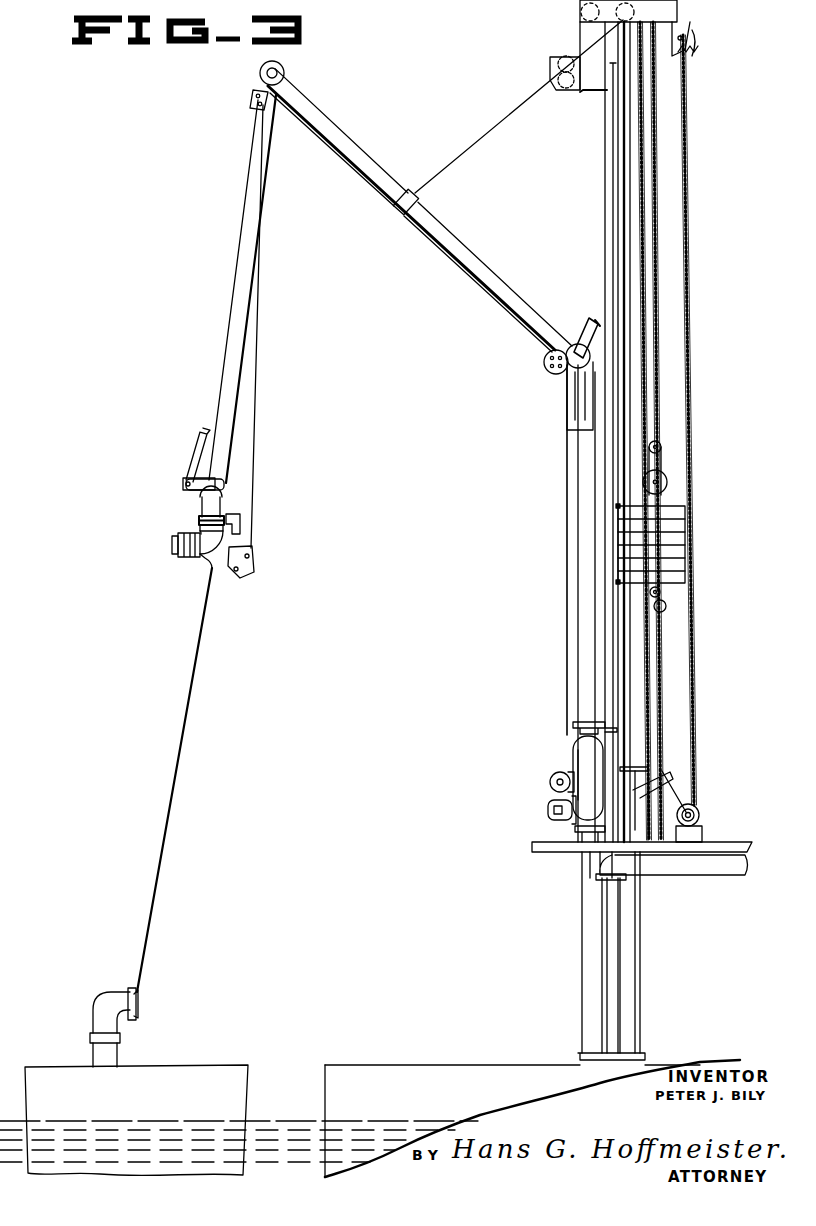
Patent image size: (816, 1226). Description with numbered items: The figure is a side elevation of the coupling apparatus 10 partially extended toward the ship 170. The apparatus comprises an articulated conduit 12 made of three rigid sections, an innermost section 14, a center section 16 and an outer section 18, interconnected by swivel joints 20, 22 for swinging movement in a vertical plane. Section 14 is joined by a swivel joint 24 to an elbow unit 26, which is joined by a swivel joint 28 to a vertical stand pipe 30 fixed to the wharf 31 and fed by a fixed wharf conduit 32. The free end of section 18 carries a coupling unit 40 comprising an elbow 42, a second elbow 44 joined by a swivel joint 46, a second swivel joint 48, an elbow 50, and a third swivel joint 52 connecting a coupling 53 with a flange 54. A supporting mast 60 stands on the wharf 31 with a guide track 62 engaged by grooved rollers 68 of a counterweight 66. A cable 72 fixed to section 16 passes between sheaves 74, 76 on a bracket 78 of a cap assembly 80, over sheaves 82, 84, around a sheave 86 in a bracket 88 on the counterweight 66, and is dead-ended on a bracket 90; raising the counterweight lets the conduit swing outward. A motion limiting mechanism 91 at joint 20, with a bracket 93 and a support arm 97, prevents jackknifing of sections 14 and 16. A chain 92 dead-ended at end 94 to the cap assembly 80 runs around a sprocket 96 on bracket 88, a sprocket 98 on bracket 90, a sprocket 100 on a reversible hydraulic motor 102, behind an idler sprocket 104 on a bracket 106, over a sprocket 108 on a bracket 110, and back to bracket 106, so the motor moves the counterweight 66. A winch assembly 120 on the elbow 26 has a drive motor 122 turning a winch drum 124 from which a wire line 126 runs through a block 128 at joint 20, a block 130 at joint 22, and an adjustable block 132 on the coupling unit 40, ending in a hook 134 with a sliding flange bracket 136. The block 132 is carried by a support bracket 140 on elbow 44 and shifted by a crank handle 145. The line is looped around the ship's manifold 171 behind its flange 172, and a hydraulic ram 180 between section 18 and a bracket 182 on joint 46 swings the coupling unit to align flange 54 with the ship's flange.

The coupling apparatus 10 is at (208, 220).
The articulated conduit 12 is at (458, 266).
The innermost conduit section 14 is at (586, 634).
The center conduit section 16 is at (340, 134).
The outer conduit section 18 is at (222, 363).
The swivel joint 20 is at (560, 352).
The swivel joint 22 is at (283, 68).
The swivel joint 24 is at (574, 736).
The elbow unit 26 is at (586, 750).
The swivel joint 28 is at (580, 832).
The vertical stand pipe 30 is at (592, 942).
The wharf 31 is at (440, 1080).
The fixed wharf conduit 32 is at (708, 870).
The coupling unit 40 is at (170, 529).
The elbow 42 is at (230, 480).
The second elbow 44 is at (216, 504).
The swivel joint 46 is at (226, 492).
The second swivel joint 48 is at (204, 528).
The elbow 50 is at (212, 568).
The third swivel joint 52 is at (204, 562).
The coupling 53 is at (170, 545).
The flange 54 is at (180, 552).
The supporting mast 60 is at (606, 160).
The guide track 62 is at (614, 180).
The counterweight 66 is at (670, 506).
The grooved rollers 68 is at (616, 582).
The cable 72 is at (490, 150).
The sheave 74 is at (560, 56).
The sheave 76 is at (560, 74).
The bracket 78 is at (550, 62).
The cap assembly 80 is at (680, 16).
The sheave 82 is at (584, 5).
The sheave 84 is at (670, 4).
The sheave 86 is at (668, 484).
The bracket 88 is at (662, 470).
The bracket 90 is at (688, 40).
The motion limiting mechanism 91 is at (596, 318).
The chain 92 is at (688, 302).
The bracket 93 is at (576, 344).
The chain end 94 is at (594, 86).
The sprocket 96 is at (672, 442).
The support arm 97 is at (586, 344).
The sprocket 98 is at (686, 42).
The sprocket 100 is at (700, 812).
The reversible hydraulic motor 102 is at (692, 810).
The idler sprocket 104 is at (664, 776).
The bracket 106 is at (648, 778).
The sprocket 108 is at (666, 606).
The bracket 110 is at (660, 588).
The winch assembly 120 is at (542, 786).
The reversible hydraulic drive motor 122 is at (552, 808).
The winch drum 124 is at (552, 778).
The wire line 126 is at (258, 208).
The block 128 is at (548, 372).
The block 130 is at (252, 96).
The adjustable block 132 is at (258, 563).
The hook 134 is at (110, 1014).
The flange bracket 136 is at (136, 1006).
The support bracket 140 is at (232, 521).
The crank handle 145 is at (242, 541).
The ship 170 is at (140, 1105).
The ship's manifold 171 is at (98, 1012).
The ship's flange 172 is at (140, 1022).
The hydraulic ram 180 is at (200, 447).
The bracket 182 is at (190, 487).